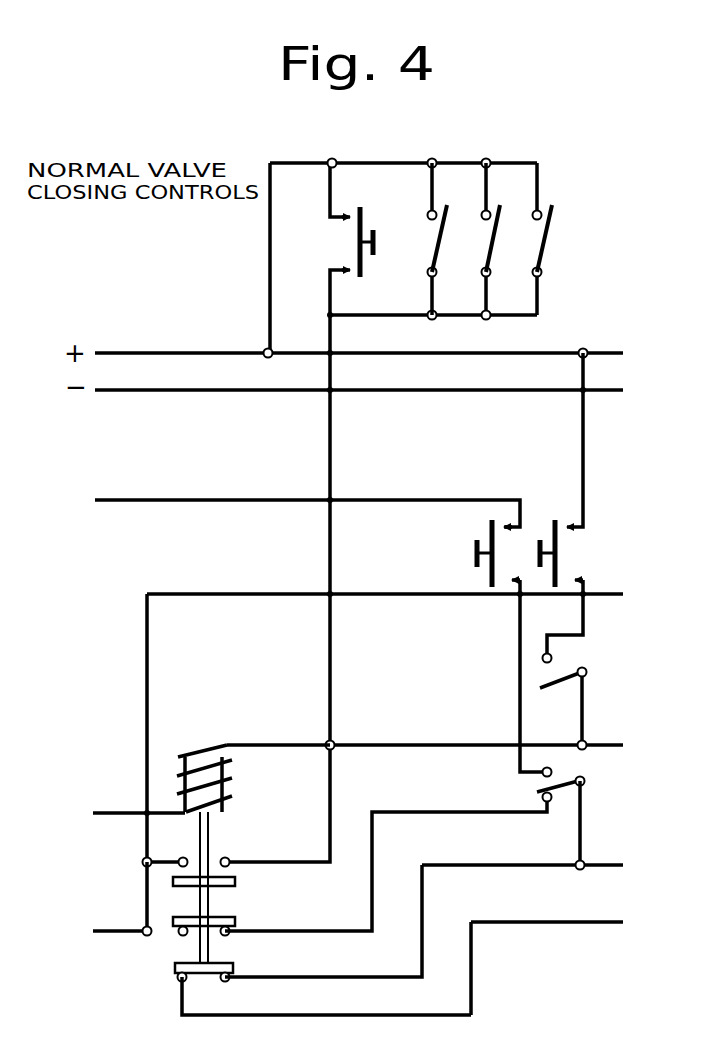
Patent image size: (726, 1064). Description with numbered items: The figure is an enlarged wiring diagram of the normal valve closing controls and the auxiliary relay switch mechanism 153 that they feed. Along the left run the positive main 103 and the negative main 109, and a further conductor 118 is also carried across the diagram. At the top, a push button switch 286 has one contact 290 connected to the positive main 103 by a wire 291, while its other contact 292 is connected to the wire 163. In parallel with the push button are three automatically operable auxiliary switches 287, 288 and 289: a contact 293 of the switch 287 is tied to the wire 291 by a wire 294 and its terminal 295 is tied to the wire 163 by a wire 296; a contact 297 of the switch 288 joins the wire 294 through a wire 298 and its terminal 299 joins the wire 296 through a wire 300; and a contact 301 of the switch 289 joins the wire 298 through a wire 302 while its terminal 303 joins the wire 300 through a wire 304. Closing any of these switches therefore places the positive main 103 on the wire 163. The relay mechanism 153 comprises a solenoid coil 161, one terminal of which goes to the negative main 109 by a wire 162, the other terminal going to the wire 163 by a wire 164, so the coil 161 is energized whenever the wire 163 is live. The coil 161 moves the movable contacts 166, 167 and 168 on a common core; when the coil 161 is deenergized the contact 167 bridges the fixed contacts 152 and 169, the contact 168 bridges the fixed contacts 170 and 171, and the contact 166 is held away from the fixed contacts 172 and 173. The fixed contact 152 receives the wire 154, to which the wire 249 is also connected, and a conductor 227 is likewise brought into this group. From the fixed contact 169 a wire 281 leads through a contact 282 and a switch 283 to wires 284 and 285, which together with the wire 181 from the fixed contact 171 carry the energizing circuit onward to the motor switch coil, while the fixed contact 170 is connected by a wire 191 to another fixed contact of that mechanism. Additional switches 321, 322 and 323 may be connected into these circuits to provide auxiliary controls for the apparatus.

The positive main 103 is at (150, 354).
The negative main 109 is at (160, 390).
The conductor 118 is at (205, 500).
The fixed contact 152 is at (178, 934).
The auxiliary relay switch mechanism 153 is at (242, 877).
The wire 154 is at (115, 930).
The solenoid coil 161 is at (222, 778).
The wire 162 is at (130, 812).
The wire 163 is at (330, 291).
The wire 164 is at (285, 742).
The movable contact 166 is at (235, 884).
The movable contact 167 is at (235, 918).
The movable contact 168 is at (210, 974).
The fixed contact 169 is at (228, 936).
The fixed contact 170 is at (178, 983).
The fixed contact 171 is at (229, 982).
The fixed contact 172 is at (178, 858).
The fixed contact 173 is at (229, 856).
The wire 181 is at (470, 865).
The wire 191 is at (512, 925).
The conductor 227 is at (403, 740).
The wire 249 is at (195, 594).
The wire 281 is at (410, 812).
The contact 282 is at (540, 797).
The switch 283 is at (588, 795).
The wire 284 is at (582, 838).
The wire 285 is at (590, 870).
The push button switch 286 is at (363, 215).
The auxiliary switch 287 is at (459, 239).
The auxiliary switch 288 is at (512, 241).
The auxiliary switch 289 is at (550, 232).
The contact 290 is at (333, 212).
The wire 291 is at (332, 178).
The contact 292 is at (330, 263).
The contact 293 is at (406, 238).
The wire 294 is at (432, 178).
The terminal 295 is at (428, 273).
The wire 296 is at (349, 317).
The contact 297 is at (488, 214).
The wire 298 is at (486, 178).
The terminal 299 is at (484, 274).
The wire 300 is at (463, 315).
The contact 301 is at (539, 214).
The wire 302 is at (537, 175).
The terminal 303 is at (535, 274).
The wire 304 is at (538, 308).
The additional switch 321 is at (490, 530).
The additional switch 322 is at (558, 545).
The additional switch 323 is at (568, 666).